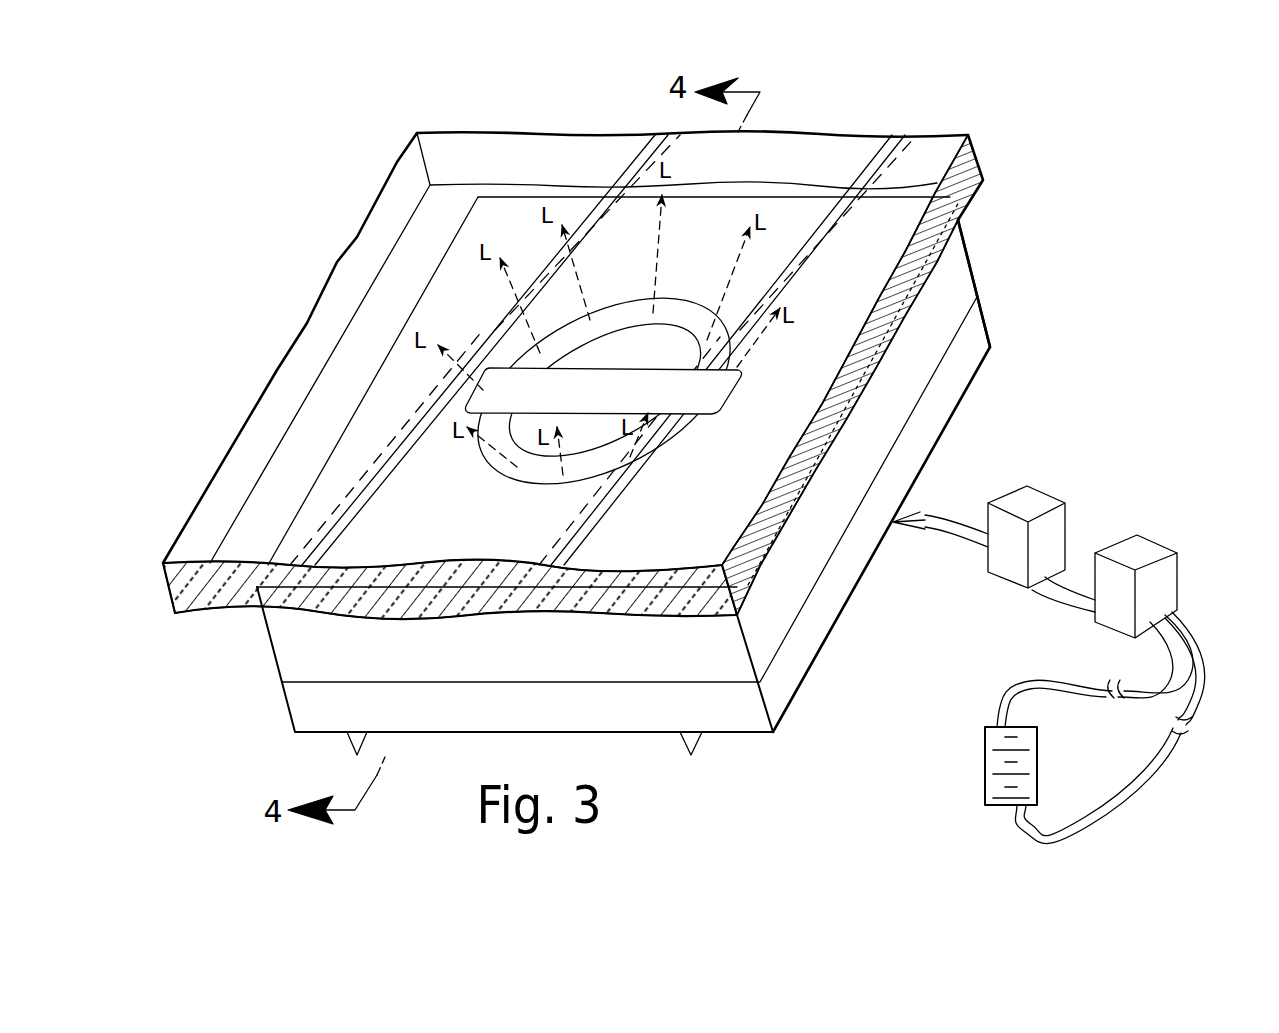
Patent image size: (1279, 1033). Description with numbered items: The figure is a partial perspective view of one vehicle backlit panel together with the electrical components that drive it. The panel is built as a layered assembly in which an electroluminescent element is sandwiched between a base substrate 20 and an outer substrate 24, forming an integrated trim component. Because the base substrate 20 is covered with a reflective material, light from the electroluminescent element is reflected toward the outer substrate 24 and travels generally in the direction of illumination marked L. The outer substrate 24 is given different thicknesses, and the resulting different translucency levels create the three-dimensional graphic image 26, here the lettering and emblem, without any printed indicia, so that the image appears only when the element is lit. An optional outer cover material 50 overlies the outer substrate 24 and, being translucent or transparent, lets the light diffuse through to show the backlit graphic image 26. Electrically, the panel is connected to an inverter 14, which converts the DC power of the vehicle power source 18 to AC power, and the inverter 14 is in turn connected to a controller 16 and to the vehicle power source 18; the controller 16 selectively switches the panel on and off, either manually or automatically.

The inverter 14 is at (1040, 487).
The controller 16 is at (1145, 538).
The vehicle power source 18 is at (985, 762).
The base substrate 20 is at (977, 333).
The outer substrate 24 is at (955, 273).
The three-dimensional graphic image 26 is at (520, 228).
The outer cover material 50 is at (977, 162).